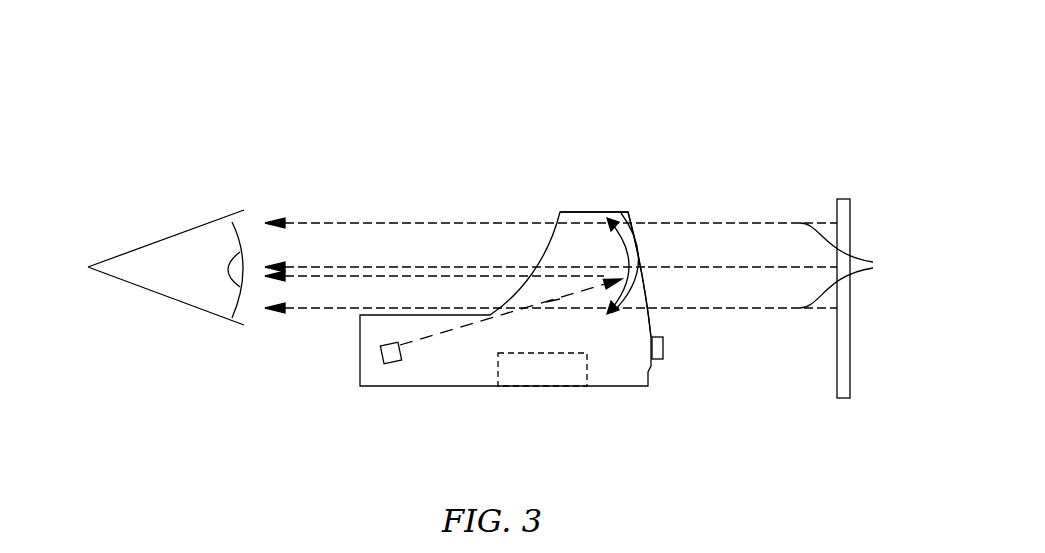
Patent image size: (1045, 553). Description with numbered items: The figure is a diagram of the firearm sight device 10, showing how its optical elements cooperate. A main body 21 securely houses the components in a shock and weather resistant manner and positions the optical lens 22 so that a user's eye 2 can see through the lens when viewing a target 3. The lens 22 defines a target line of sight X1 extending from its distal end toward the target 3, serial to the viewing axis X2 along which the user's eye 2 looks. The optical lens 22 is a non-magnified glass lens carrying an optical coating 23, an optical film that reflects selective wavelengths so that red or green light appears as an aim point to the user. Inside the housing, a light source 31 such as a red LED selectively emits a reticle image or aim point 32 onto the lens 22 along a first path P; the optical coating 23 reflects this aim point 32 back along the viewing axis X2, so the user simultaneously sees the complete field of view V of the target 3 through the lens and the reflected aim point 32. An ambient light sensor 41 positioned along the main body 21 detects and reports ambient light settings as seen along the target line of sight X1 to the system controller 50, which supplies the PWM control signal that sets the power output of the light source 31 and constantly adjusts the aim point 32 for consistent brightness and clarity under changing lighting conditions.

The firearm sight device 10 is at (256, 122).
The user's eye 2 is at (157, 293).
The target 3 is at (837, 378).
The main body 21 is at (415, 387).
The optical lens 22 is at (628, 222).
The optical coating 23 is at (608, 238).
The light source 31 is at (378, 356).
The reticle image/aim point 32 is at (640, 277).
The ambient light sensor 41 is at (663, 347).
The system controller 50 is at (527, 387).
The first path P is at (553, 303).
The field of view V is at (847, 265).
The target line of sight X1 is at (732, 267).
The viewing axis X2 is at (357, 270).